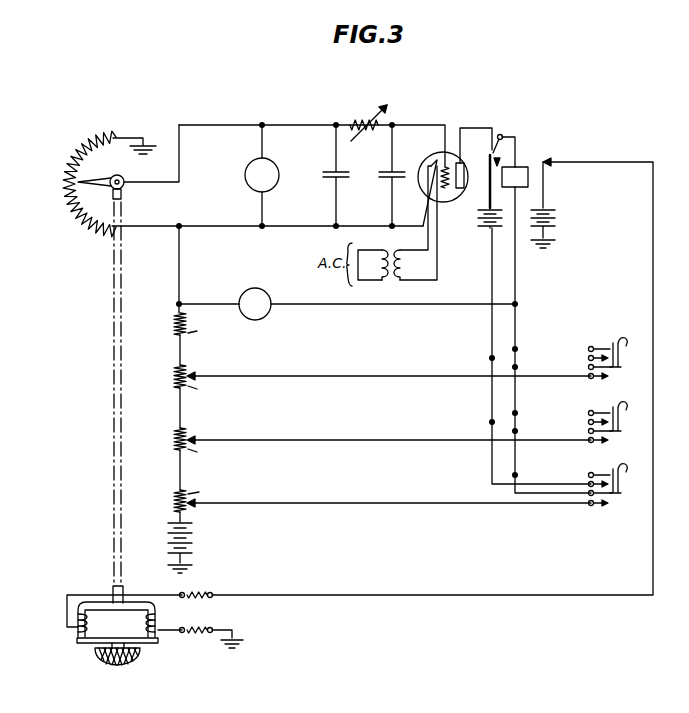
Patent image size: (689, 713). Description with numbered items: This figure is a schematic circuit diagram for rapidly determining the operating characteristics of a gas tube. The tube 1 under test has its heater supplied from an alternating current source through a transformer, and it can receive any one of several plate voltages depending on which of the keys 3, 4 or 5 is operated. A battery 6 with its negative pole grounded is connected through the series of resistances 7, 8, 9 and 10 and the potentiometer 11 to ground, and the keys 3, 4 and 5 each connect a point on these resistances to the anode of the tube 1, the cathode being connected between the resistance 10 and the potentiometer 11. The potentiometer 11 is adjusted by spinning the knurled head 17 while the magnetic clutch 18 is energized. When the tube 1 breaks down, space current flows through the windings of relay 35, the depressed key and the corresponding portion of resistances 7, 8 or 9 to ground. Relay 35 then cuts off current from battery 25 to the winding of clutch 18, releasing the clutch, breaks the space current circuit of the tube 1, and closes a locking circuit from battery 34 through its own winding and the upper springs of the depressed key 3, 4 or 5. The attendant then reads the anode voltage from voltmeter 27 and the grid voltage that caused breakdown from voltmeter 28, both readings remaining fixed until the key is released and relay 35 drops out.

The tube 1 is at (438, 155).
The key 3 is at (608, 354).
The key 4 is at (601, 413).
The key 5 is at (601, 475).
The battery 6 is at (190, 536).
The resistance 7 is at (172, 502).
The resistance 8 is at (172, 441).
The resistance 9 is at (172, 377).
The resistance 10 is at (172, 323).
The potentiometer 11 is at (73, 152).
The knurled head 17 is at (142, 658).
The magnetic clutch 18 is at (67, 622).
The battery 25 is at (557, 222).
The voltmeter 27 is at (268, 314).
The voltmeter 28 is at (250, 190).
The battery 34 is at (478, 226).
The relay 35 is at (521, 164).